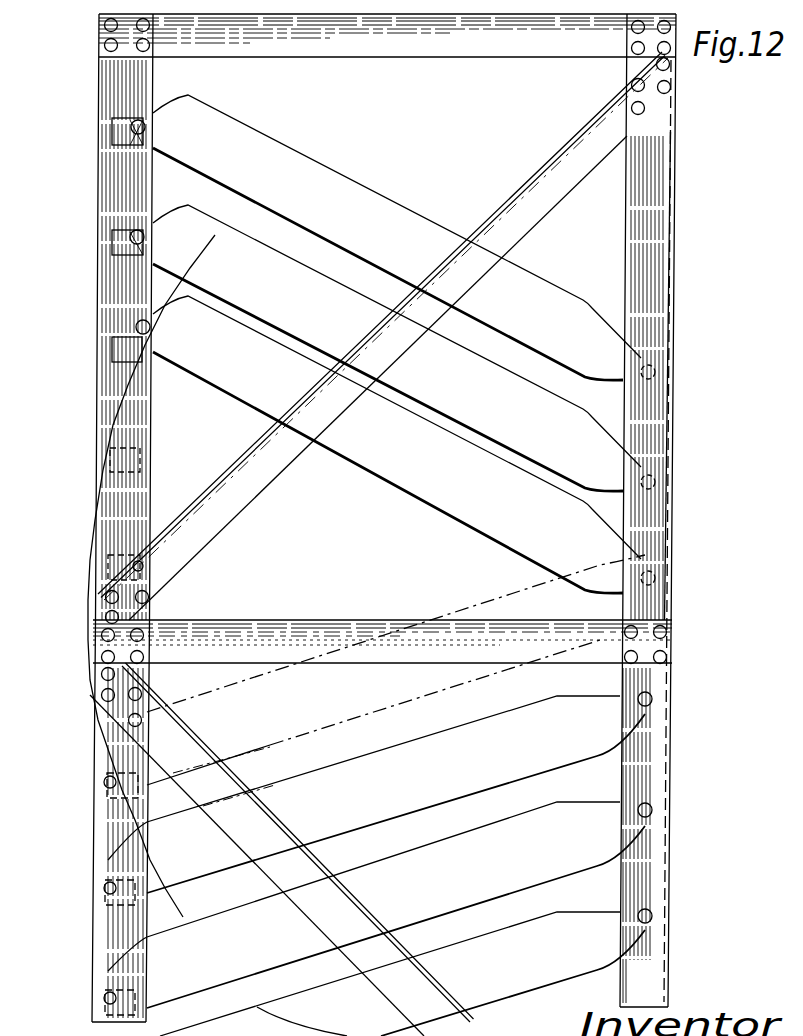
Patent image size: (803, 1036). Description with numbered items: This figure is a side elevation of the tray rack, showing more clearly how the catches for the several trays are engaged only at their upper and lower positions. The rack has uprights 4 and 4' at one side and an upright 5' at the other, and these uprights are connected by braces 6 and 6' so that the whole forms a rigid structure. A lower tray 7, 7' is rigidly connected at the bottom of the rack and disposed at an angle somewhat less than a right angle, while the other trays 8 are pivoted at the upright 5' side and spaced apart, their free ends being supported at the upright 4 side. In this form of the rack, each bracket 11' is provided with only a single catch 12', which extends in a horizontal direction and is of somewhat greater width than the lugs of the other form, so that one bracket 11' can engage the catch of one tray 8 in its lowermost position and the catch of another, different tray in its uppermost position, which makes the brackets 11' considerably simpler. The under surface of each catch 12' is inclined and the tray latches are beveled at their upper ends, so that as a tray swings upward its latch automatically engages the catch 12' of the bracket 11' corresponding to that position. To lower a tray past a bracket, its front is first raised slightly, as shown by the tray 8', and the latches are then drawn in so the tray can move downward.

The upright 4 is at (105, 319).
The upright 4' is at (105, 821).
The upright 5' is at (667, 510).
The brace 6 is at (383, 333).
The brace 6' is at (282, 849).
The lower tray 7 is at (387, 35).
The lower tray 7' is at (382, 641).
The tray 8 is at (381, 565).
The tray 8' is at (404, 444).
The bracket 11' is at (100, 667).
The catch 12' is at (93, 512).